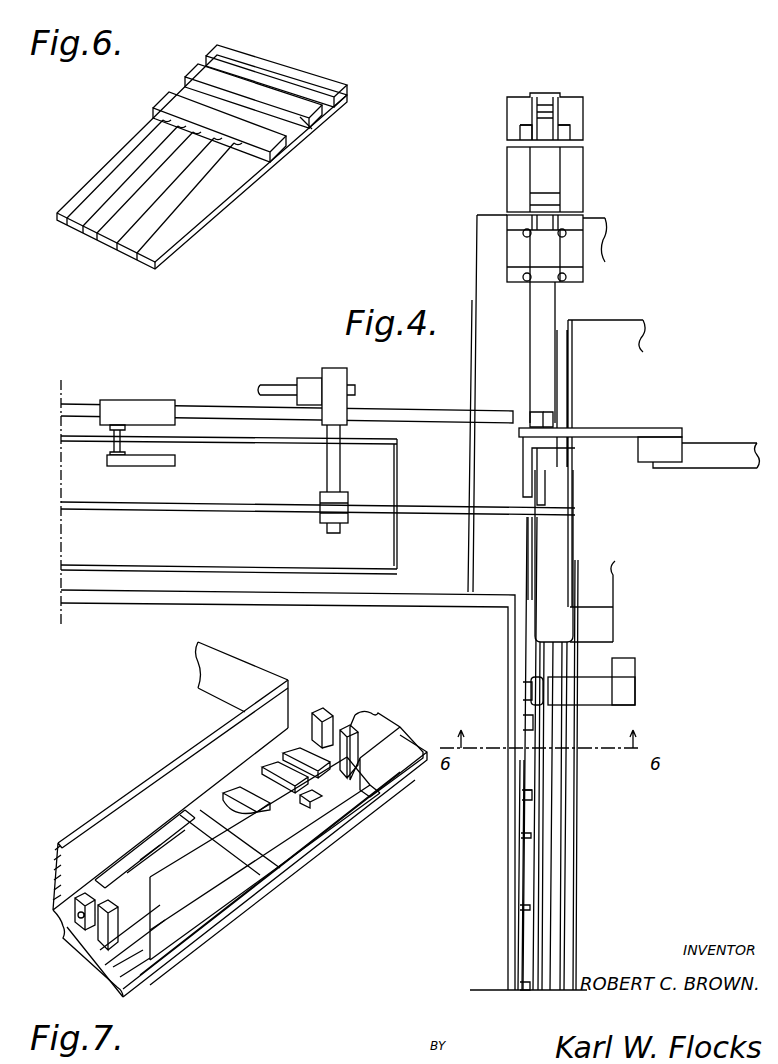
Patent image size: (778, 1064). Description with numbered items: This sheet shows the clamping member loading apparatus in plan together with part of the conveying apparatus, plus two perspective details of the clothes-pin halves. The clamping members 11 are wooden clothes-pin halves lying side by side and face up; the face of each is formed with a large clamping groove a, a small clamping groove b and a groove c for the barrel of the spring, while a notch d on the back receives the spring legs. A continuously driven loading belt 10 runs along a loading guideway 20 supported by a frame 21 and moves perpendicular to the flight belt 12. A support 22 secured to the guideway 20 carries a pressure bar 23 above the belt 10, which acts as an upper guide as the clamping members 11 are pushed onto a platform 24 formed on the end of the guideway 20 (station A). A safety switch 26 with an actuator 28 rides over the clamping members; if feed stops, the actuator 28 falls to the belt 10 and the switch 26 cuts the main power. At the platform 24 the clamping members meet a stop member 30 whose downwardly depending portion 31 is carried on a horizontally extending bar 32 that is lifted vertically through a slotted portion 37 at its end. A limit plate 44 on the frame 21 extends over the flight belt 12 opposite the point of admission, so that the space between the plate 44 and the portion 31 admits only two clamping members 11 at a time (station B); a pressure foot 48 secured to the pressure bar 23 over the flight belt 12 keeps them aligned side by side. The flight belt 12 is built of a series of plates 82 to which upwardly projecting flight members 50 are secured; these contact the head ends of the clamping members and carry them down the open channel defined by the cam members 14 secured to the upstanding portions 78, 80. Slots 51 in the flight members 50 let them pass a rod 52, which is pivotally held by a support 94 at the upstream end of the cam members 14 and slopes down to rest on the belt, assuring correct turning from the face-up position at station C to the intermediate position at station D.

In FIG. 4, the loading belt 10 is at (68, 538).
In FIG. 6, the clamping members 11 is at (238, 185).
In FIG. 7, the clamping members 11 is at (243, 840).
In FIG. 4, the flight belt 12 is at (581, 191).
In FIG. 7, the flight belt 12 is at (405, 716).
In FIG. 4, the cam members 14 is at (515, 953).
In FIG. 4, the loading guideway 20 is at (403, 600).
In FIG. 7, the loading guideway 20 is at (200, 668).
In FIG. 4, the frame 21 is at (470, 269).
In FIG. 4, the support 22 is at (330, 466).
In FIG. 4, the pressure bar 23 is at (423, 509).
In FIG. 4, the platform 24 is at (447, 570).
In FIG. 4, the safety switch 26 is at (150, 404).
In FIG. 4, the actuator 28 is at (165, 462).
In FIG. 4, the stop member 30 is at (638, 427).
In FIG. 4, the downwardly depending portion 31 is at (525, 463).
In FIG. 4, the horizontally extending bar 32 is at (591, 432).
In FIG. 4, the slotted portion 37 is at (661, 462).
In FIG. 4, the limit plate 44 is at (572, 385).
In FIG. 4, the pressure foot 48 is at (560, 551).
In FIG. 4, the flight members 50 is at (535, 420).
In FIG. 7, the flight members 50 is at (325, 712).
In FIG. 4, the slots 51 is at (545, 414).
In FIG. 7, the slots 51 is at (345, 722).
In FIG. 4, the rod 52 is at (540, 857).
In FIG. 7, the rod 52 is at (127, 872).
In FIG. 4, the upstanding portion 78 is at (503, 890).
In FIG. 4, the upstanding portion 80 is at (575, 897).
In FIG. 4, the plates 82 is at (577, 122).
In FIG. 7, the plates 82 is at (391, 784).
In FIG. 4, the support 94 is at (597, 690).
In FIG. 4, the station A is at (431, 428).
In FIG. 4, the station B is at (521, 525).
In FIG. 4, the station C is at (534, 666).
In FIG. 7, the station C is at (188, 731).
In FIG. 4, the station D is at (505, 990).
In FIG. 6, the large clamping groove a is at (330, 111).
In FIG. 7, the large clamping groove a is at (290, 755).
In FIG. 6, the small clamping groove b is at (204, 80).
In FIG. 7, the small clamping groove b is at (265, 768).
In FIG. 6, the groove c is at (152, 113).
In FIG. 7, the groove c is at (225, 810).
In FIG. 6, the notch d is at (313, 132).
In FIG. 7, the notch d is at (307, 803).